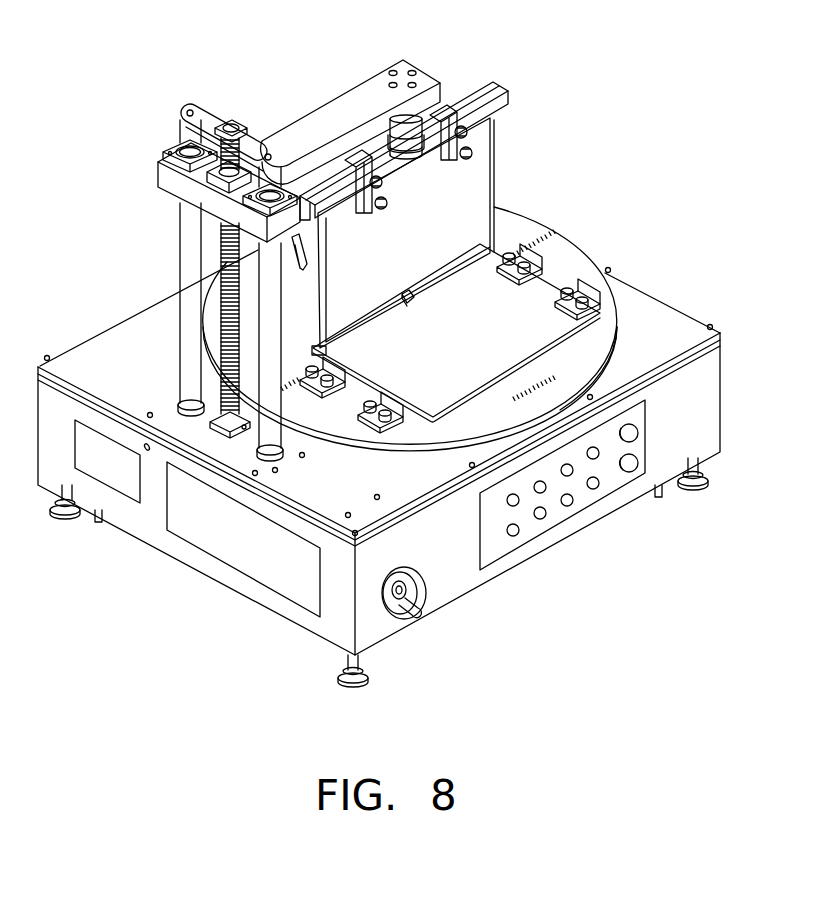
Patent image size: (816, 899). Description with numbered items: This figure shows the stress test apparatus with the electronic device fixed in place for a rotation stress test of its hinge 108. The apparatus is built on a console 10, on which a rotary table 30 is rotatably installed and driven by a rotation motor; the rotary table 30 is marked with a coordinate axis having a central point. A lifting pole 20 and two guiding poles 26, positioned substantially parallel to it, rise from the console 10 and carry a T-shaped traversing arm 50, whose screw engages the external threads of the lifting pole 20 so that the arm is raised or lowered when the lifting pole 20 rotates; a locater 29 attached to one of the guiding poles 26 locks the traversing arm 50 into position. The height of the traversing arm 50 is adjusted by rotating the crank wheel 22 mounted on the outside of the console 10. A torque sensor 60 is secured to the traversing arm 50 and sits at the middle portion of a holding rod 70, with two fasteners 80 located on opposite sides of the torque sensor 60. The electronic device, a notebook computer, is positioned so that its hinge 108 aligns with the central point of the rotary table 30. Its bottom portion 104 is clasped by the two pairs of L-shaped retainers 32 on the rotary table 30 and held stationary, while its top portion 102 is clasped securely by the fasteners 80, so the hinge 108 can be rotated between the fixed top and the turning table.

The console 10 is at (687, 408).
The lifting pole 20 is at (152, 279).
The crank wheel 22 is at (412, 608).
The guiding poles 26 is at (193, 245).
The locater 29 is at (228, 264).
The rotary table 30 is at (603, 357).
The L-shaped retainers 32 is at (586, 345).
The traversing arm 50 is at (320, 135).
The torque sensor 60 is at (397, 123).
The holding rod 70 is at (497, 87).
The fasteners 80 is at (453, 118).
The top portion 102 is at (468, 187).
The bottom portion 104 is at (535, 300).
The hinge 108 is at (413, 292).